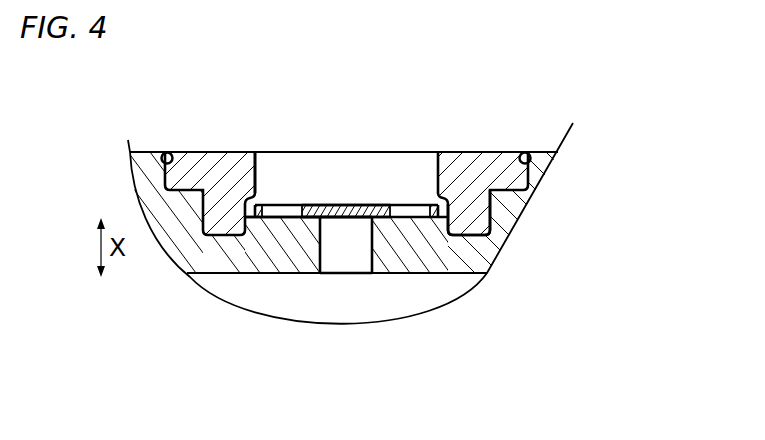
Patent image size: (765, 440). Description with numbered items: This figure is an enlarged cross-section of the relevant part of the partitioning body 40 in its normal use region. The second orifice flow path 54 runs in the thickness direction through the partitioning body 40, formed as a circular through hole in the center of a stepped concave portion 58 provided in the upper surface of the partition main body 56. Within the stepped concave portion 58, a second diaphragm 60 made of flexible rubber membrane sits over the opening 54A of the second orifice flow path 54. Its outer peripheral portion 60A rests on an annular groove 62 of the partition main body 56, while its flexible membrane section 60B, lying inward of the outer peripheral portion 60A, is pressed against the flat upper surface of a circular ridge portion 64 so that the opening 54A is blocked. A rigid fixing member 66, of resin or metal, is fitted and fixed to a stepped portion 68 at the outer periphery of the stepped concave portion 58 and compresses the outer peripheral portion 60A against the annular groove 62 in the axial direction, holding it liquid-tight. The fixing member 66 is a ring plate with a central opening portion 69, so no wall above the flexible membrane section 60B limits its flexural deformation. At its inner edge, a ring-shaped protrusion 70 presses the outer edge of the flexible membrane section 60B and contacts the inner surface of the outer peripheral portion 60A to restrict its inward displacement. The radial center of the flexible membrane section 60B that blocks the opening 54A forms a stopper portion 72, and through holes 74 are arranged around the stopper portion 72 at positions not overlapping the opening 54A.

The partitioning body 40 is at (353, 204).
The second orifice flow path 54 is at (343, 258).
The opening 54A is at (380, 207).
The partition main body 56 is at (543, 150).
The stepped concave portion 58 is at (293, 168).
The second diaphragm 60 is at (410, 182).
The outer peripheral portion 60A is at (478, 213).
The flexible membrane section 60B is at (327, 205).
The annular groove 62 is at (213, 258).
The ridge portion 64 is at (270, 220).
The fixing member 66 is at (208, 150).
The stepped portion 68 is at (173, 150).
The opening portion 69 is at (263, 150).
The ring-shaped protrusion 70 is at (443, 230).
The stopper portion 72 is at (363, 205).
The through hole 74 is at (412, 222).